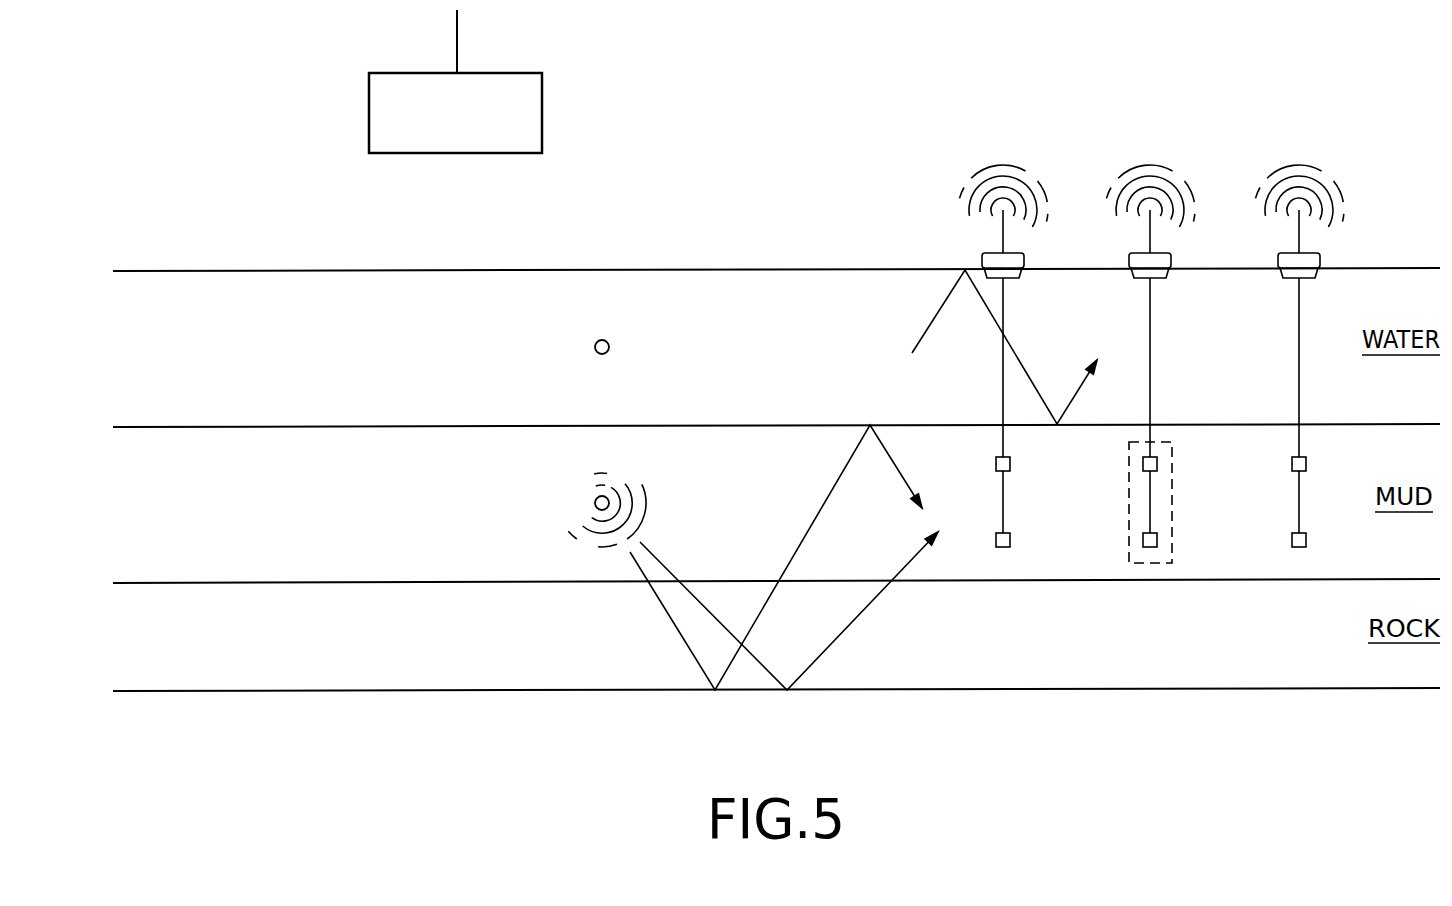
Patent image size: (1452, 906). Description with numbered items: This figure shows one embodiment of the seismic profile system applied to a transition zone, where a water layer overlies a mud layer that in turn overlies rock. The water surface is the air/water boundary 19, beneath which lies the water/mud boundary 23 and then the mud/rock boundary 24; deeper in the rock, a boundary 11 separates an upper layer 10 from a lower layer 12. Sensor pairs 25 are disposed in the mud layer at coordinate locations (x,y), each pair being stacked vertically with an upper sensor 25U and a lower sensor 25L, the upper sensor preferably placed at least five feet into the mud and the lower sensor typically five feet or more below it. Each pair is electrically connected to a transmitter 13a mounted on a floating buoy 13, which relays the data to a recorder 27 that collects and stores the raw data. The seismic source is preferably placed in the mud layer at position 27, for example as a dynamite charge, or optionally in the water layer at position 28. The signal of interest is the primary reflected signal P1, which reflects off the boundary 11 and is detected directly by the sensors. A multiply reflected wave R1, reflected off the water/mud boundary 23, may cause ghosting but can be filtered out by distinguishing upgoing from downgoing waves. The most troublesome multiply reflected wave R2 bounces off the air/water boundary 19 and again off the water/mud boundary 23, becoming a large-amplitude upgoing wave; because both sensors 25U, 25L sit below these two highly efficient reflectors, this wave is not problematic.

The recorder 27 is at (594, 503).
The source position in water layer 28 is at (594, 346).
The air/water boundary 19 is at (233, 271).
The water/mud boundary 23 is at (178, 427).
The mud/rock boundary 24 is at (170, 583).
The boundary 11 is at (222, 691).
The layer 10 is at (1205, 648).
The layer 12 is at (1205, 748).
The buoy 13 is at (985, 257).
The transmitter 13a is at (1003, 233).
The upper sensor 25U is at (1011, 464).
The lower sensor 25L is at (1011, 540).
The sensor pair 25 is at (1175, 538).
The multiply reflected wave R1 is at (898, 472).
The multiply reflected wave R2 is at (1075, 395).
The primary reflected signal P1 is at (865, 608).